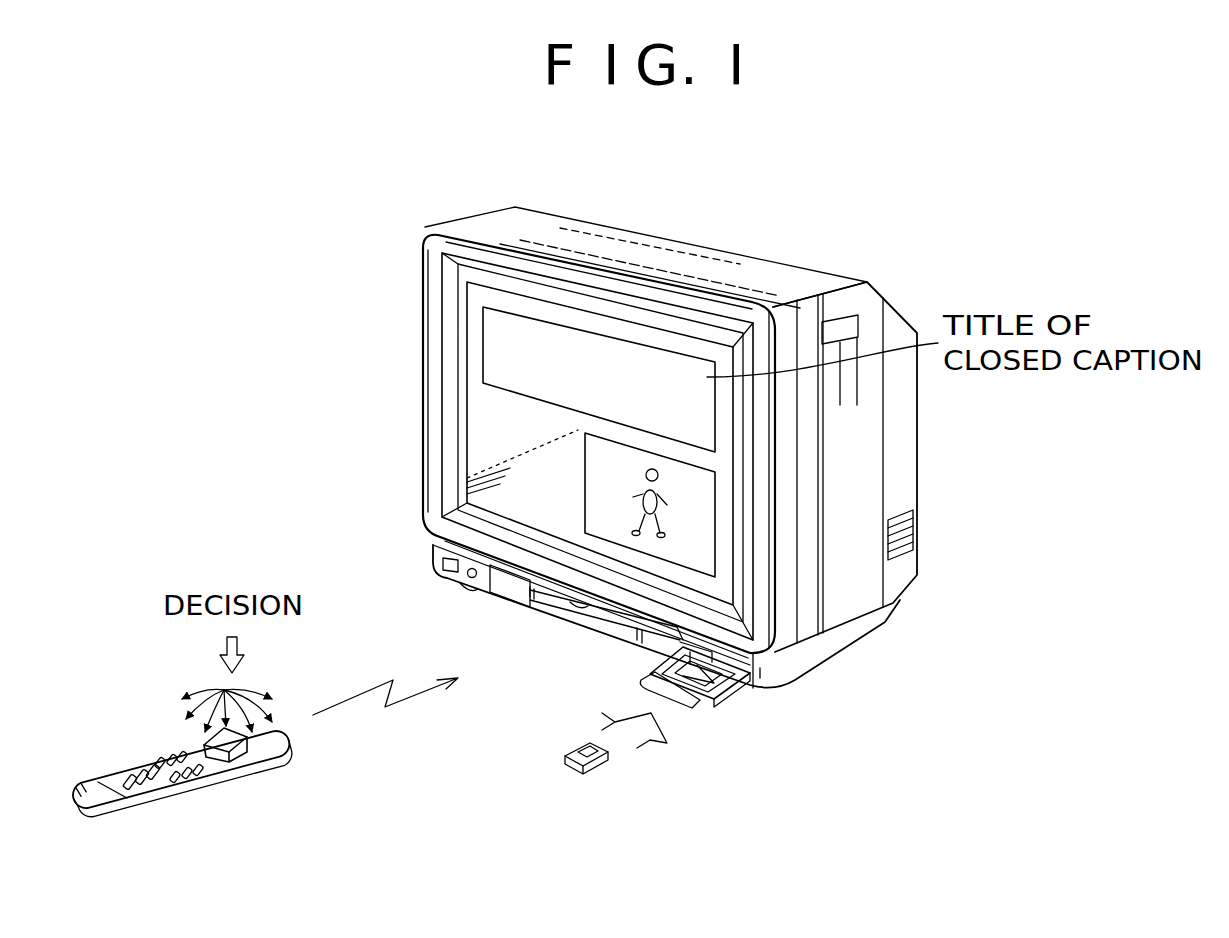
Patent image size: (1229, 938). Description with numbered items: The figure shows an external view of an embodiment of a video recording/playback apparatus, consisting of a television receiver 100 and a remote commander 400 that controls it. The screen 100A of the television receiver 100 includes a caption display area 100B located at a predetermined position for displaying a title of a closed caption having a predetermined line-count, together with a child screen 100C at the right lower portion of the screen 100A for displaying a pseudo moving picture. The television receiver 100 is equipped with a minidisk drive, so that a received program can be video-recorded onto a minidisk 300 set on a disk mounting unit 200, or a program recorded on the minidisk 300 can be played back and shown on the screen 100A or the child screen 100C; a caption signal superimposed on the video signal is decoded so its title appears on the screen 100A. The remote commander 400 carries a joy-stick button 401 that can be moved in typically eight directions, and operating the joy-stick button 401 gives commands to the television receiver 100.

The television receiver 100 is at (744, 260).
The screen 100A is at (477, 295).
The caption display area 100B is at (715, 438).
The child screen 100C is at (653, 552).
The disk mounting unit 200 is at (715, 688).
The minidisk 300 is at (603, 767).
The remote commander 400 is at (162, 807).
The joy-stick button 401 is at (246, 749).